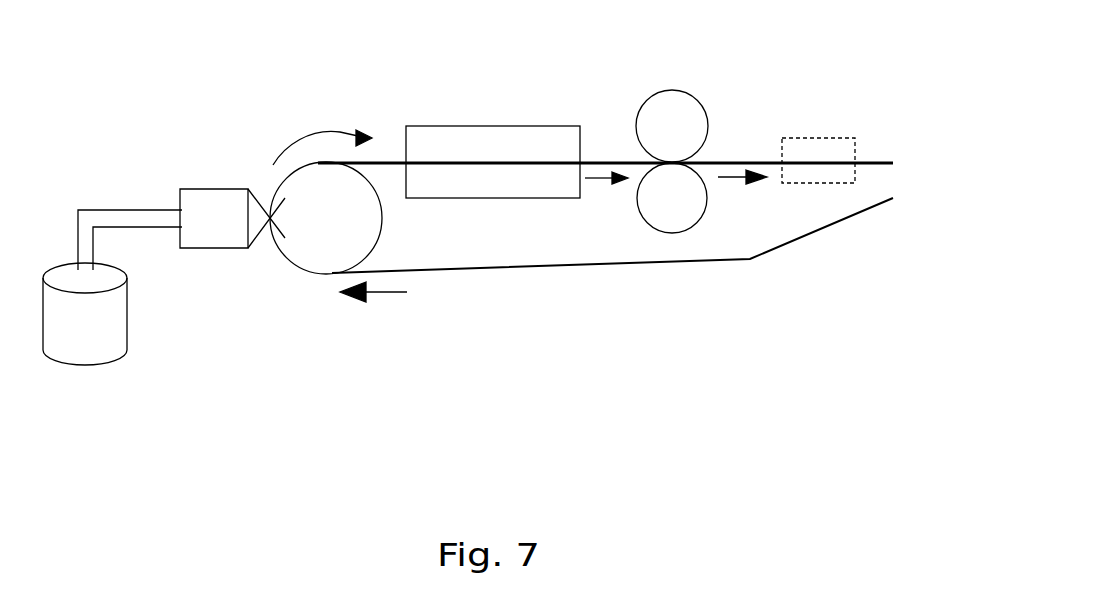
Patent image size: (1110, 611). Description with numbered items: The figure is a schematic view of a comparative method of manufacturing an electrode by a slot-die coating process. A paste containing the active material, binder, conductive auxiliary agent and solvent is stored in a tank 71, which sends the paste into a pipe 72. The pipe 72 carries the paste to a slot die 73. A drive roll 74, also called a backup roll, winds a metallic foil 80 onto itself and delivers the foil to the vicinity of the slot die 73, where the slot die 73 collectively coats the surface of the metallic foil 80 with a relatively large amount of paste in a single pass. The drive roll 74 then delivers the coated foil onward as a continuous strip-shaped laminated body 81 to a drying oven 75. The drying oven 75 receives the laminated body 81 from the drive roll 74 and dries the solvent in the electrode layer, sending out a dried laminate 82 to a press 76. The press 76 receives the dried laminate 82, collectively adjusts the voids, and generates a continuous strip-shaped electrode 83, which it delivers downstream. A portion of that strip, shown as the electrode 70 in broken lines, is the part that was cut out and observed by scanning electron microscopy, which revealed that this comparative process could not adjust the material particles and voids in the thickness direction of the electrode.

The electrode 70 is at (840, 138).
The tank 71 is at (95, 366).
The pipe 72 is at (102, 209).
The slot die 73 is at (215, 188).
The drive roll (backup roll) 74 is at (293, 250).
The drying oven 75 is at (545, 130).
The press 76 is at (686, 90).
The metallic foil 80 is at (433, 278).
The laminated body 81 is at (387, 160).
The dried laminate 82 is at (611, 160).
The electrode 83 is at (746, 160).